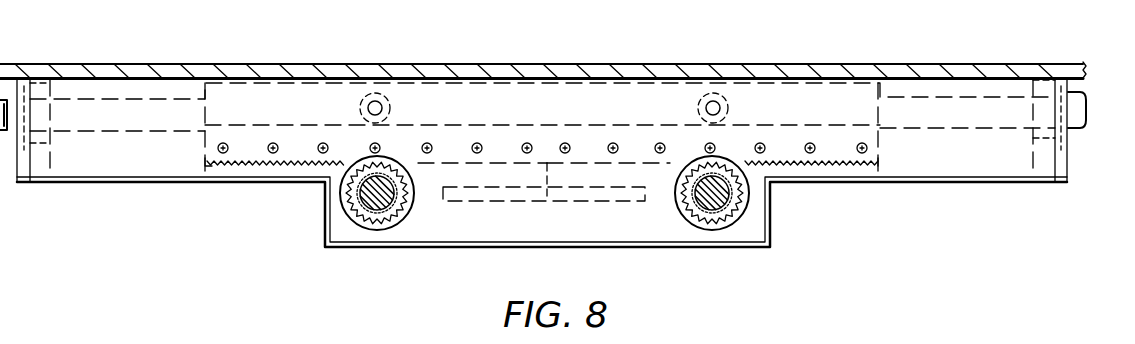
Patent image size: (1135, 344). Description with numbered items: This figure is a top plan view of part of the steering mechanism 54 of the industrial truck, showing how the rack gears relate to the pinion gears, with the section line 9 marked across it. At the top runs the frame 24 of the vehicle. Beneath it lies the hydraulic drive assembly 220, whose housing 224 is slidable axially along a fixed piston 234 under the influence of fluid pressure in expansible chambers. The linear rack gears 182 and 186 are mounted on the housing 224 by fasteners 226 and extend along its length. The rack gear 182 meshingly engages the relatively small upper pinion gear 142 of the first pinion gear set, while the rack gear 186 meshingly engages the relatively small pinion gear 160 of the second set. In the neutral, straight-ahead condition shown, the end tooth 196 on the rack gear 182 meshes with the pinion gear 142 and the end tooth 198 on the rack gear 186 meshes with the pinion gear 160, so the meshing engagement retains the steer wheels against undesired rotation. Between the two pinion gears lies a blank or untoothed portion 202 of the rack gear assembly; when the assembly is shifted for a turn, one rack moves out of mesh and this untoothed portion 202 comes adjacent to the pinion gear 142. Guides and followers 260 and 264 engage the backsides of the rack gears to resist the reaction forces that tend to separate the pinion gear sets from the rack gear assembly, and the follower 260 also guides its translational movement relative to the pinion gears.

The frame 24 is at (876, 62).
The steering mechanism 54 is at (1127, 254).
The fixed piston 234 is at (142, 99).
The hydraulic drive assembly 220 is at (560, 36).
The housing 224 is at (580, 87).
The fasteners 226 is at (520, 140).
The guide and follower 264 is at (358, 103).
The guide and follower 260 is at (730, 100).
The upper pinion gear 142 is at (397, 232).
The pinion gear 160 is at (712, 231).
The end tooth 196 is at (408, 158).
The end tooth 198 is at (668, 170).
The blank or untoothed portion 202 is at (544, 198).
The linear rack gear 182 is at (302, 173).
The linear rack gear 186 is at (800, 173).
The section line 9- 9 is at (372, 48).